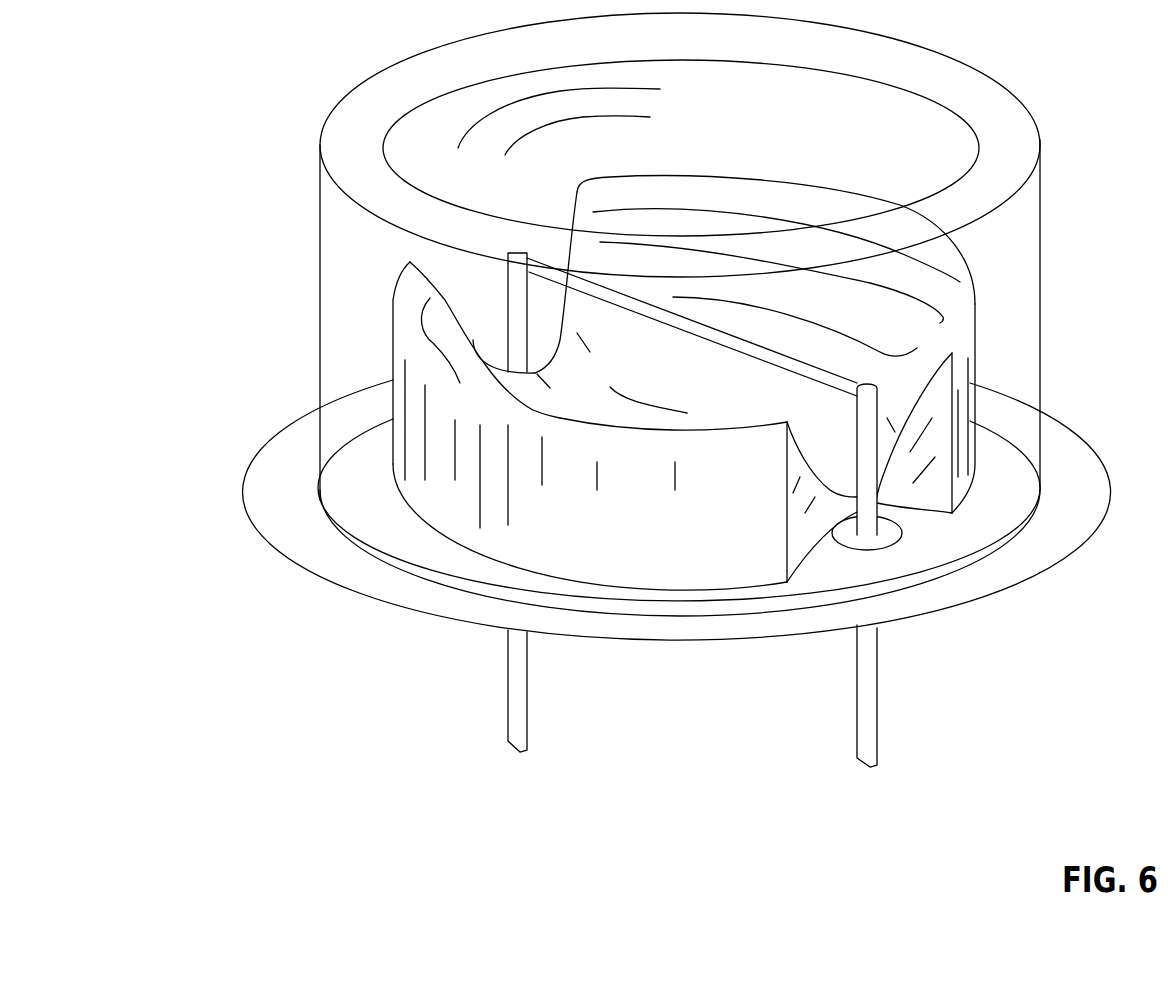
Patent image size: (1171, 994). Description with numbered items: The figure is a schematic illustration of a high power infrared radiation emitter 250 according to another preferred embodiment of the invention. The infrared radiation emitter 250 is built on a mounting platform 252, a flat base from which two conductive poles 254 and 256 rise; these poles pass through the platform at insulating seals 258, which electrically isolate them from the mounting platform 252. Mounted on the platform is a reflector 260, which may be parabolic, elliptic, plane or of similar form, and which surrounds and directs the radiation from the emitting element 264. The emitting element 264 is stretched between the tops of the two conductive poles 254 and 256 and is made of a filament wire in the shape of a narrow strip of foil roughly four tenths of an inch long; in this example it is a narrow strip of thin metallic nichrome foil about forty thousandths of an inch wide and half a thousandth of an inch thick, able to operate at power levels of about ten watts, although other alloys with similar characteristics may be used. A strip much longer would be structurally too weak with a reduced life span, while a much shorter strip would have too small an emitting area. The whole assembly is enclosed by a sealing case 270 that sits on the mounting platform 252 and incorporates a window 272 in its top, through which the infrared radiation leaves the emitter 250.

The high power infrared radiation emitter 250 is at (286, 154).
The mounting platform 252 is at (682, 630).
The conductive pole 254 is at (507, 685).
The conductive pole 256 is at (878, 680).
The insulating seals 258 is at (902, 533).
The reflector 260 is at (405, 359).
The emitting element 264 is at (677, 326).
The sealing case 270 is at (1031, 234).
The window 272 is at (927, 127).